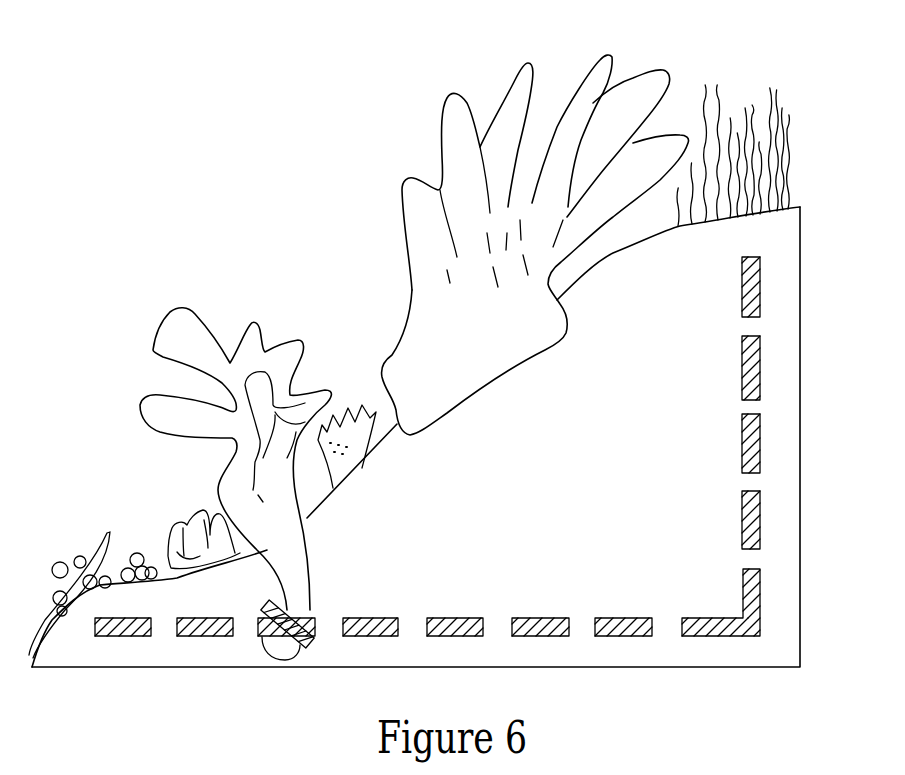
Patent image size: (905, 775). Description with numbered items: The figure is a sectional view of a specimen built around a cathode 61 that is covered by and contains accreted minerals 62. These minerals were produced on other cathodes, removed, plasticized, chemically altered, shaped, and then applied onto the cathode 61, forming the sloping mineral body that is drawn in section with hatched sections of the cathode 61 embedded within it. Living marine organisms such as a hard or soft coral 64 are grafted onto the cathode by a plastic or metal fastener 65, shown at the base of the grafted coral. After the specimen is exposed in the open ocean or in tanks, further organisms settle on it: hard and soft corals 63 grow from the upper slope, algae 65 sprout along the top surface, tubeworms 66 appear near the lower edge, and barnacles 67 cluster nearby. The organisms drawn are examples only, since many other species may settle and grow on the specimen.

The cathode 61 is at (757, 362).
The accreted minerals 62 is at (763, 242).
The hard and soft corals 63 is at (645, 80).
The hard or soft coral 64 is at (183, 325).
The plastic or metal fastener; algae 65 is at (767, 126).
The tubeworms 66 is at (102, 540).
The barnacles 67 is at (210, 523).